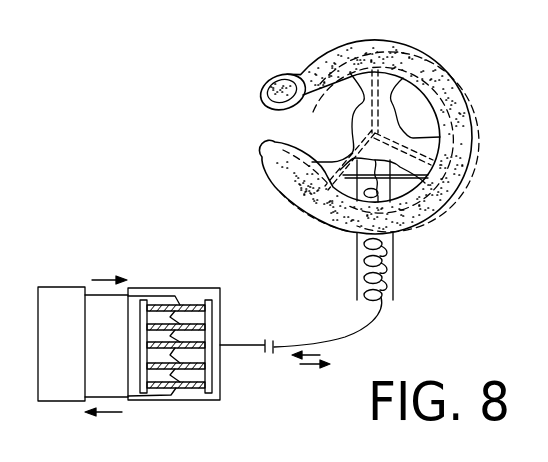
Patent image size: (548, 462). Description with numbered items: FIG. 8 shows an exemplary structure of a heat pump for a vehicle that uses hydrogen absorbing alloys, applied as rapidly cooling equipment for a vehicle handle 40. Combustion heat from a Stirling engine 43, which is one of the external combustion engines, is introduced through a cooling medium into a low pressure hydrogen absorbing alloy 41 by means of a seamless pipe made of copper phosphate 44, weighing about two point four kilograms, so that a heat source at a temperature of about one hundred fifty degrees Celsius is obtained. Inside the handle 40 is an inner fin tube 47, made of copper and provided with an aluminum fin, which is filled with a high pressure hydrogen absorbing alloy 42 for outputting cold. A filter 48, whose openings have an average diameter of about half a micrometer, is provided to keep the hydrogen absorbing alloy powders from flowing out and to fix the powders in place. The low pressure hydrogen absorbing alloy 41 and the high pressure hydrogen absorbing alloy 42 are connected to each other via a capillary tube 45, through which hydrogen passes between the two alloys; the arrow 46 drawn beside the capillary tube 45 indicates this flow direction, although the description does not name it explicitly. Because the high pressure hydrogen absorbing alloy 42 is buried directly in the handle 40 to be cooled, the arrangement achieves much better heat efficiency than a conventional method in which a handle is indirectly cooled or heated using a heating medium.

The handle 40 is at (290, 68).
The low pressure hydrogen absorbing alloy MH1 41 is at (197, 380).
The high pressure hydrogen absorbing alloy MH2 42 is at (340, 58).
The Stirling engine 43 is at (54, 330).
The seamless pipe made of copper phosphate 44 is at (153, 388).
The capillary tube 45 is at (383, 270).
The flow direction arrow 46 is at (360, 270).
The inner fin tube 47 is at (457, 93).
The filter 48 is at (457, 187).